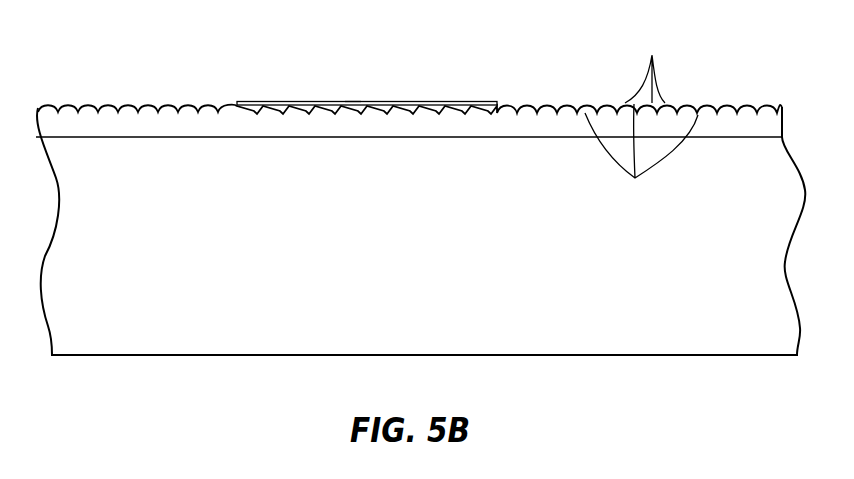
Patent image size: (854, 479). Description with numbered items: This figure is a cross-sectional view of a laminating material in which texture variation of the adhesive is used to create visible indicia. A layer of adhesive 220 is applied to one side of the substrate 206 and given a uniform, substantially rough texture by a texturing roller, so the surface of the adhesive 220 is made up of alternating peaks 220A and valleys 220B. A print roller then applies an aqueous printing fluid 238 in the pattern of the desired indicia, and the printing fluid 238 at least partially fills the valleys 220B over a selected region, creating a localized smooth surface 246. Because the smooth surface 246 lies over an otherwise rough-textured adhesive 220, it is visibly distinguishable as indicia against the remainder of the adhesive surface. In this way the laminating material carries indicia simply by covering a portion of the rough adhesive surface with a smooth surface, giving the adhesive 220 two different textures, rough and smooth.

The substrate 206 is at (143, 261).
The adhesive 220 is at (132, 127).
The peaks 220A is at (653, 66).
The valleys 220B is at (641, 157).
The aqueous printing fluid 238 is at (268, 102).
The localized smooth surface 246 is at (353, 102).